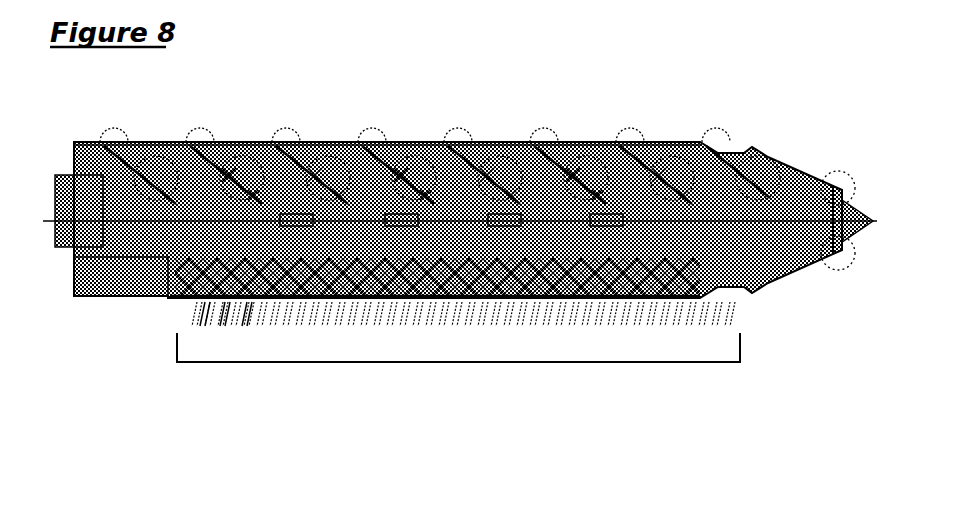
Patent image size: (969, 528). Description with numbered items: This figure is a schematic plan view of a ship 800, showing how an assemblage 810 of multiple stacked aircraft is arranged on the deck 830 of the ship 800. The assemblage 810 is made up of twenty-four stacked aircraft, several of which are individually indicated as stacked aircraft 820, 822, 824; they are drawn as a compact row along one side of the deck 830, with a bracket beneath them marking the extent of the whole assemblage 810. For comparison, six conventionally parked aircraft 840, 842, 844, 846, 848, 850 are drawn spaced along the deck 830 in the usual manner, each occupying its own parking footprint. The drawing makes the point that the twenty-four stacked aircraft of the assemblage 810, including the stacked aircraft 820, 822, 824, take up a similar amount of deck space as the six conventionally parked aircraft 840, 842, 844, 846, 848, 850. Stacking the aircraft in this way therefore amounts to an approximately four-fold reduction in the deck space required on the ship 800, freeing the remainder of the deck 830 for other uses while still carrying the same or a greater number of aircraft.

The ship 800 is at (86, 137).
The assemblage 810 is at (423, 363).
The stacked aircraft 820 is at (205, 328).
The stacked aircraft 822 is at (225, 330).
The stacked aircraft 824 is at (247, 330).
The deck 830 is at (793, 263).
The conventionally parked aircraft 840 is at (210, 135).
The conventionally parked aircraft 842 is at (290, 134).
The conventionally parked aircraft 844 is at (376, 134).
The conventionally parked aircraft 846 is at (467, 134).
The conventionally parked aircraft 848 is at (548, 134).
The conventionally parked aircraft 850 is at (636, 134).